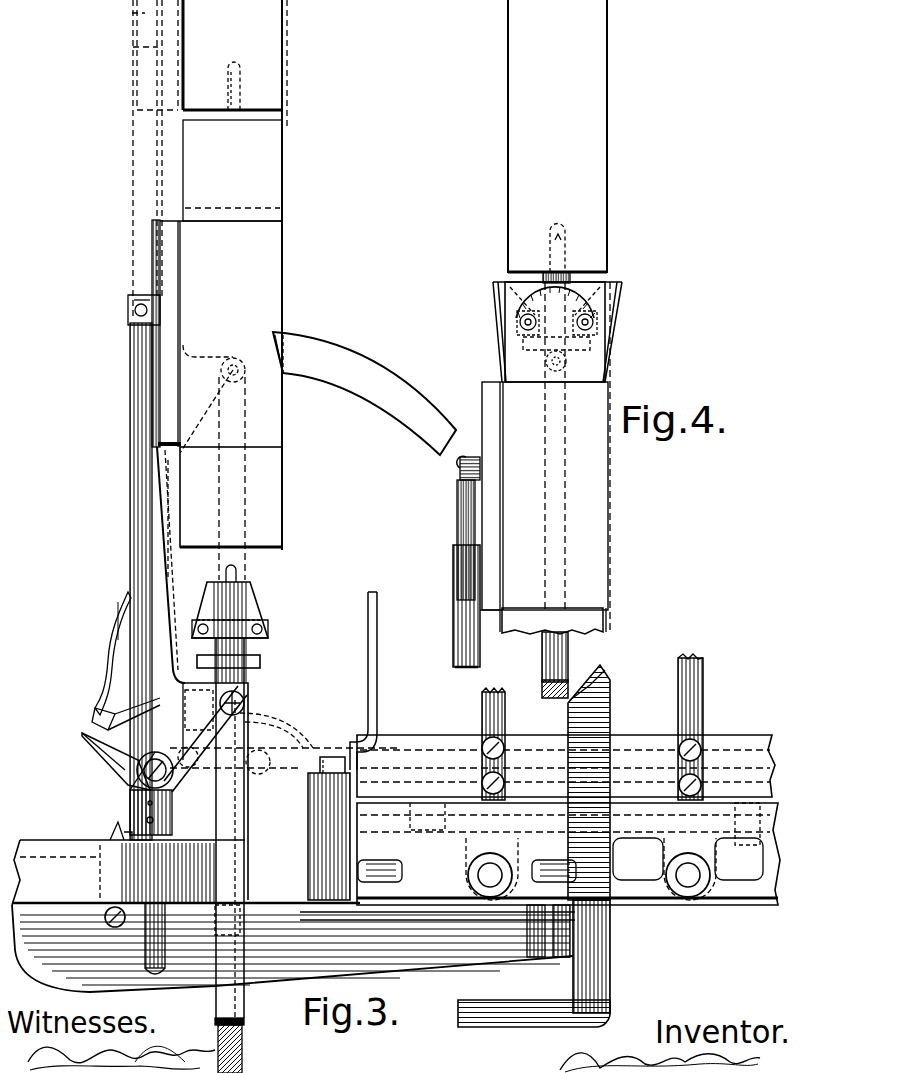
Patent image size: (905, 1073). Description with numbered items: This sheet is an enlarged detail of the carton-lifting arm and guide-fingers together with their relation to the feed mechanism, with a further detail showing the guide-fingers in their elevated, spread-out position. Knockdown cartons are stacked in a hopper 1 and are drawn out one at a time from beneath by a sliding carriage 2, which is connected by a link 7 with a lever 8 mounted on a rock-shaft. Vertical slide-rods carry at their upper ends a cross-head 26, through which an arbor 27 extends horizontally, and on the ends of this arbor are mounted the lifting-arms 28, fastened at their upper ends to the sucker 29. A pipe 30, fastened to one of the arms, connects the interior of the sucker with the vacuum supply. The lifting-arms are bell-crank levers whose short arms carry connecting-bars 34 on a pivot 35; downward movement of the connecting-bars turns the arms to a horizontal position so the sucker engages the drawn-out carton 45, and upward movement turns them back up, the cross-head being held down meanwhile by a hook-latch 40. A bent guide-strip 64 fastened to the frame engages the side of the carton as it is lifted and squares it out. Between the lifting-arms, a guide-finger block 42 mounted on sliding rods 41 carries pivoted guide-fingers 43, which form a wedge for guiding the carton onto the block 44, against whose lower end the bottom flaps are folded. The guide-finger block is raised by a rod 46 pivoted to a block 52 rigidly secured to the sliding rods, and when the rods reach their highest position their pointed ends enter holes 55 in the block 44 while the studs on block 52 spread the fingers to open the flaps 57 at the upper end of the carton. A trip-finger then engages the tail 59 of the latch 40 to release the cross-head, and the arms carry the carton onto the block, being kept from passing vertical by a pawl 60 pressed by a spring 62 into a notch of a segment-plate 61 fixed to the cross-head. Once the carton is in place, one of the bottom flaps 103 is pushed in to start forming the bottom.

In FIG. 3, the hopper 1 is at (731, 757).
In FIG. 3, the sliding carriage 2 is at (400, 808).
In FIG. 3, the link 7 is at (612, 968).
In FIG. 3, the lever 8 is at (518, 1008).
In FIG. 3, the cross-head 26 is at (143, 808).
In FIG. 3, the arbor 27 is at (138, 766).
In FIG. 3, the lifting-arms 28 is at (150, 527).
In FIG. 4, the lifting-arms 28 is at (463, 660).
In FIG. 3, the sucker 29 is at (168, 298).
In FIG. 4, the sucker 29 is at (485, 440).
In FIG. 3, the pipe 30 is at (135, 585).
In FIG. 4, the pipe 30 is at (468, 502).
In FIG. 3, the connecting-bars 34 is at (230, 806).
In FIG. 3, the pivot 35 is at (248, 701).
In FIG. 3, the hook-latch 40 is at (110, 822).
In FIG. 3, the sliding rods 41 is at (240, 1033).
In FIG. 4, the sliding rods 41 is at (553, 647).
In FIG. 3, the guide-finger block 42 is at (268, 630).
In FIG. 3, the guide-fingers 43 is at (210, 604).
In FIG. 4, the guide-fingers 43 is at (508, 282).
In FIG. 3, the block 44 is at (262, 10).
In FIG. 4, the block 44 is at (593, 95).
In FIG. 3, the carton 45 is at (263, 242).
In FIG. 4, the carton 45 is at (592, 538).
In FIG. 3, the rod 46 is at (232, 1063).
In FIG. 4, the rod 46 is at (563, 687).
In FIG. 3, the block 52 is at (258, 662).
In FIG. 3, the holes 55 is at (235, 78).
In FIG. 4, the holes 55 is at (557, 237).
In FIG. 4, the flaps 57 is at (497, 318).
In FIG. 3, the tail 59 is at (218, 927).
In FIG. 3, the pawl 60 is at (100, 707).
In FIG. 3, the segment-plate 61 is at (110, 738).
In FIG. 3, the spring 62 is at (112, 643).
In FIG. 3, the bent guide-strip 64 is at (355, 348).
In FIG. 3, the bottom flap 103 is at (272, 508).
In FIG. 4, the bottom flap 103 is at (590, 620).